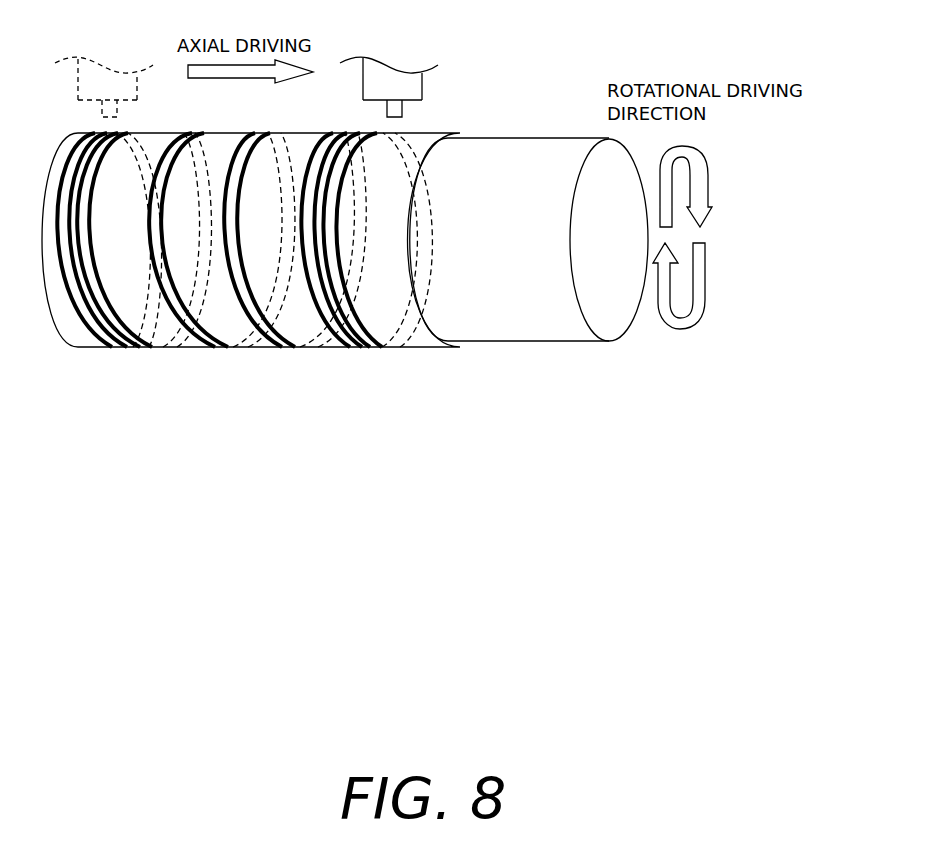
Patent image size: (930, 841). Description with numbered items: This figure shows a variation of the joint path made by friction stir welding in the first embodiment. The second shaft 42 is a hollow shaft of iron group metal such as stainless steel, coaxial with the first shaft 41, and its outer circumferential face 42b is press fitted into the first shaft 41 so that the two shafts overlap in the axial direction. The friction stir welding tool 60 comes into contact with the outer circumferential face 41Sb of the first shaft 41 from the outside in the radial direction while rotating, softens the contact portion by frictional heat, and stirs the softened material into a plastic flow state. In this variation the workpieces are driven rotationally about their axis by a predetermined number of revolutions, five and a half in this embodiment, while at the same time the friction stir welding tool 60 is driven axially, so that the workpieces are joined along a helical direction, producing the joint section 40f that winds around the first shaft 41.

The friction stir welding tool 60 is at (440, 95).
The first shaft 41 is at (237, 382).
The outer circumferential face of the first shaft 41Sb is at (182, 347).
The joint section 40f is at (300, 367).
The outer circumferential face of the second shaft 42b is at (495, 342).
The second shaft 42 is at (553, 376).